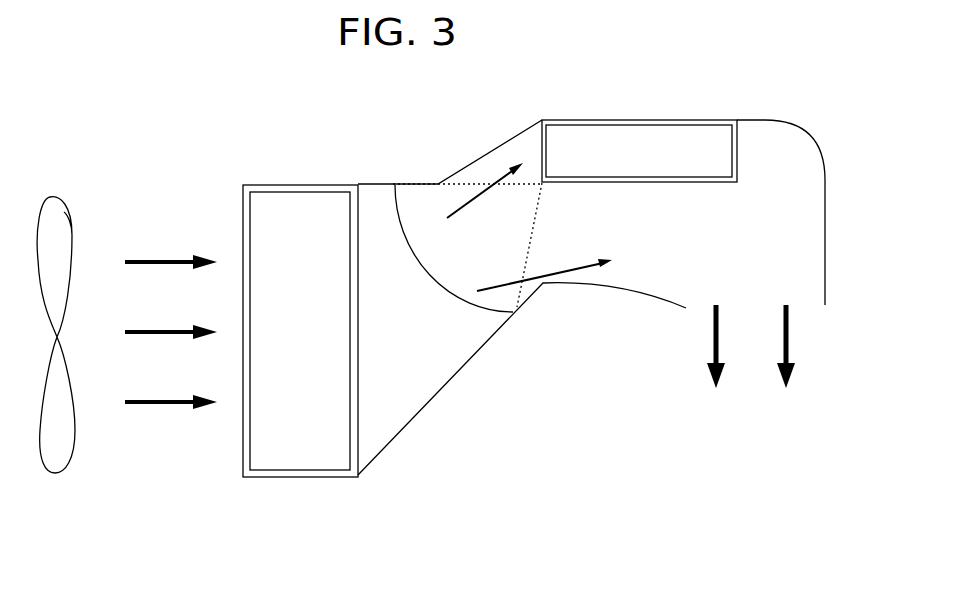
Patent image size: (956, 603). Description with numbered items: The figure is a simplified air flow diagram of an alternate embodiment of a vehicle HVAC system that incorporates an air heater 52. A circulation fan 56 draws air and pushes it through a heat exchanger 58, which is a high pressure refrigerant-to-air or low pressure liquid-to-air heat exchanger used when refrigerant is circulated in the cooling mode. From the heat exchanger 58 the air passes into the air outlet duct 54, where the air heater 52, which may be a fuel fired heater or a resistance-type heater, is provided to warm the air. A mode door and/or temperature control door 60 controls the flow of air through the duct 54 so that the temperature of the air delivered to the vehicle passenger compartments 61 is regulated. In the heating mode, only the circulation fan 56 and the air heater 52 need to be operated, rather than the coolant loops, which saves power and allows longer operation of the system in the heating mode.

The air heater 52 is at (713, 133).
The air outlet duct 54 is at (768, 122).
The circulation fan 56 is at (66, 212).
The heat exchanger 58 is at (287, 450).
The mode door and/or temperature control door 60 is at (428, 163).
The vehicle passenger compartments 61 is at (738, 423).